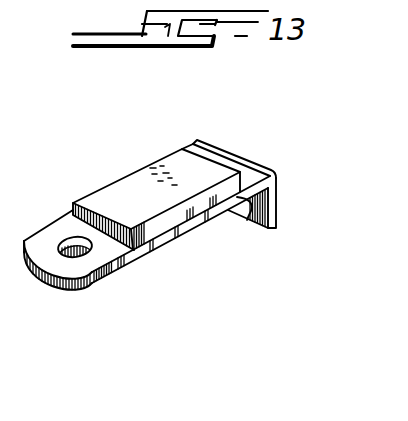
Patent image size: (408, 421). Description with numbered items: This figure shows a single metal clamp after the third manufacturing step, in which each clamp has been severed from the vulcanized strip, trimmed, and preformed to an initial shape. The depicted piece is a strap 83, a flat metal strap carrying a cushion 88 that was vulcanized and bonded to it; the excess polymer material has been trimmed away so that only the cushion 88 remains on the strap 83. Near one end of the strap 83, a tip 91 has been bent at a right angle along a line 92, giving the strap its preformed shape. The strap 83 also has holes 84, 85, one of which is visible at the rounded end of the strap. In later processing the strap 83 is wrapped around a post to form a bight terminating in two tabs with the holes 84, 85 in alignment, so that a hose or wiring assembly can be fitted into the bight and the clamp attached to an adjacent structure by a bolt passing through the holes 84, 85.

The strap 83 is at (118, 257).
The hole 84 is at (247, 220).
The hole 85 is at (64, 238).
The cushion 88 is at (128, 185).
The tip 91 is at (279, 229).
The line 92 is at (252, 155).